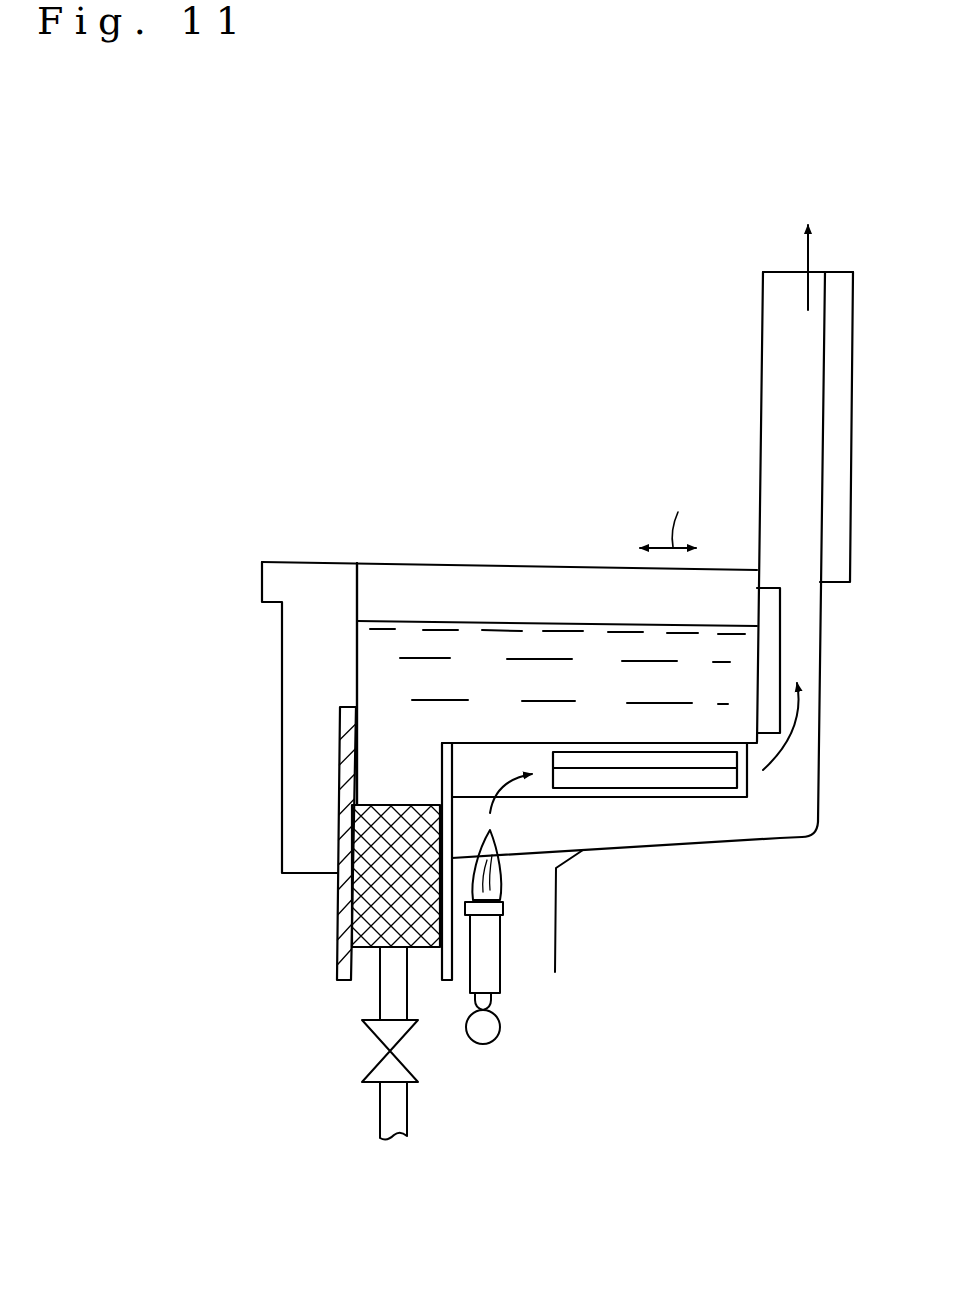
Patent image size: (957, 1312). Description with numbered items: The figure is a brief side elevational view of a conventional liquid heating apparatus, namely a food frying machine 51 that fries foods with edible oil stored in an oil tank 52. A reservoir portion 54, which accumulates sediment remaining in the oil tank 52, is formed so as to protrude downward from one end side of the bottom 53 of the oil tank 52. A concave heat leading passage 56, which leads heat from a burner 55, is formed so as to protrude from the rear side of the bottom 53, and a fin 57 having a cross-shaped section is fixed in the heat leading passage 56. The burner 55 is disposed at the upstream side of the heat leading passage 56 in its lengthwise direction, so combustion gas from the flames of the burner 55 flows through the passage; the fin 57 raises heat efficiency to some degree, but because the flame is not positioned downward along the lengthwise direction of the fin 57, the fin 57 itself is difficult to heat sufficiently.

The food frying machine 51 is at (343, 416).
The oil tank 52 is at (360, 588).
The bottom 53 is at (598, 740).
The reservoir portion 54 is at (350, 923).
The burner 55 is at (490, 940).
The heat leading passage 56 is at (493, 752).
The fin 57 is at (697, 777).